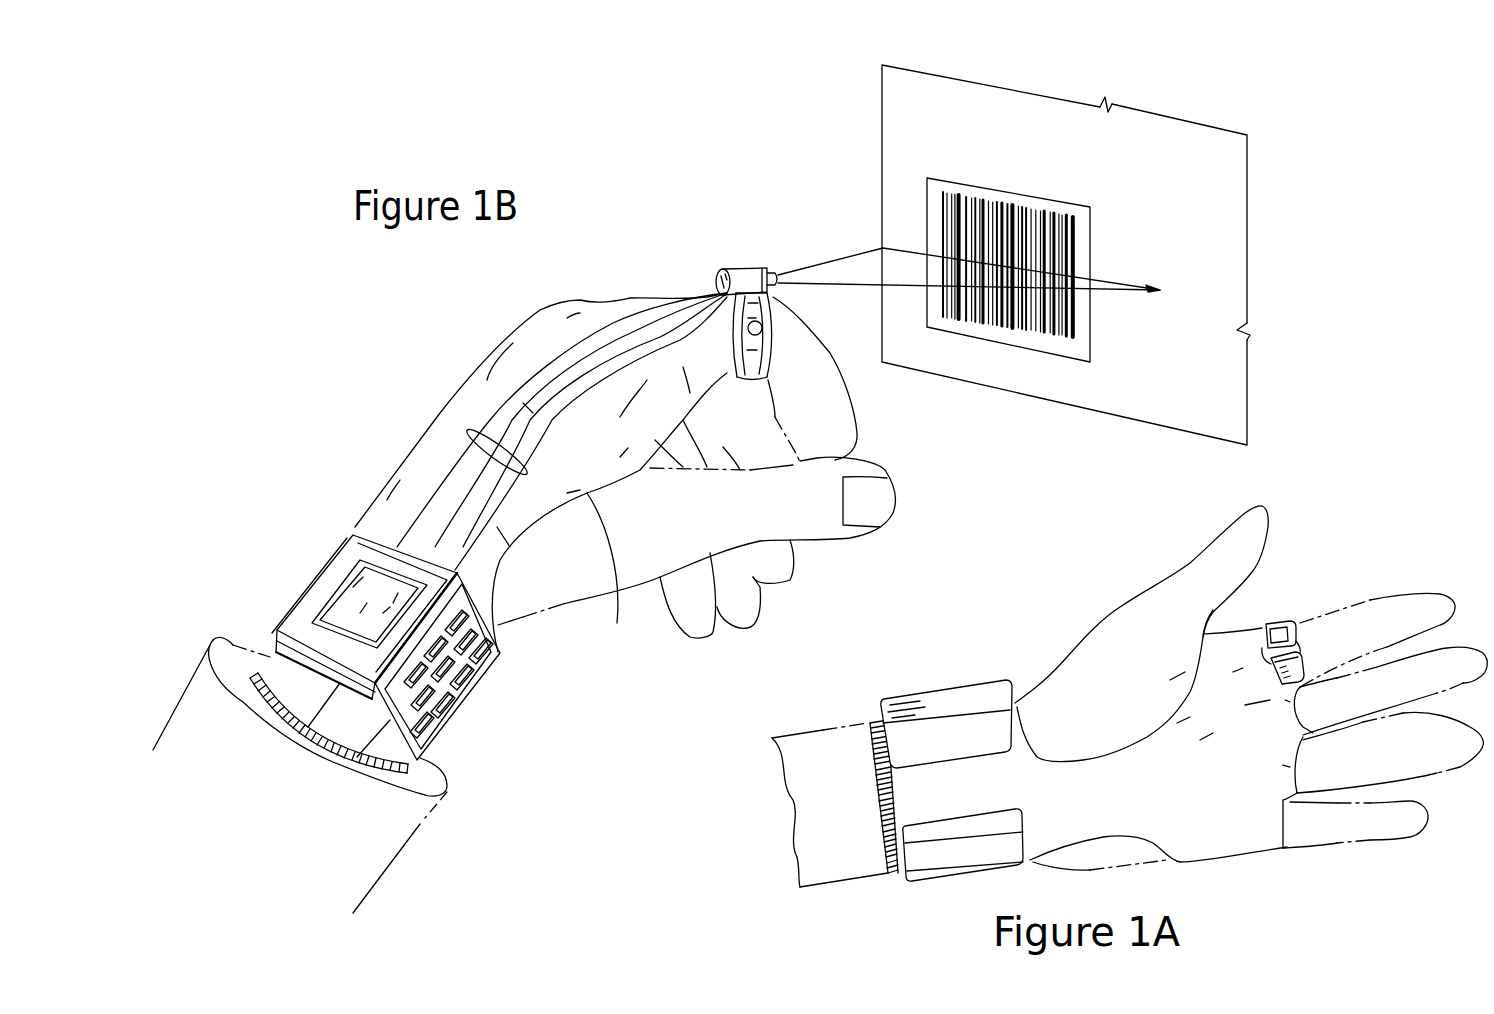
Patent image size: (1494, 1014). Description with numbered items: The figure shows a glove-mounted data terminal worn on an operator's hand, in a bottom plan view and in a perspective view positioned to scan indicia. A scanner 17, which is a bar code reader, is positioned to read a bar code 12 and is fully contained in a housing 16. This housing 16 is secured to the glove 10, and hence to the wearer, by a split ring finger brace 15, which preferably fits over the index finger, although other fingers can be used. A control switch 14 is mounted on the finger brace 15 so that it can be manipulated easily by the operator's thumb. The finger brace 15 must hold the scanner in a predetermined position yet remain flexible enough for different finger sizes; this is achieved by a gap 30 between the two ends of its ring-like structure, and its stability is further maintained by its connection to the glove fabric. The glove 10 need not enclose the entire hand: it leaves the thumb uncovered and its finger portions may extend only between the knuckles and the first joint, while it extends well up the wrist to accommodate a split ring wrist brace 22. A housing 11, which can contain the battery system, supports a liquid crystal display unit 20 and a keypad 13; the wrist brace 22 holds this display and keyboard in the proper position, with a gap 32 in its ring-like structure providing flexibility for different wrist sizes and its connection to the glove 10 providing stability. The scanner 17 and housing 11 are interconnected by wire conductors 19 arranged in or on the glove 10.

In FIG. 1B, the glove 10 is at (625, 475).
In FIG. 1A, the glove 10 is at (1242, 857).
In FIG. 1B, the housing 11 is at (272, 650).
In FIG. 1B, the bar code 12 is at (1015, 194).
In FIG. 1B, the keypad 13 is at (465, 667).
In FIG. 1B, the control switch 14 is at (762, 330).
In FIG. 1B, the split ring finger brace 15 is at (758, 310).
In FIG. 1A, the split ring finger brace 15 is at (1283, 622).
In FIG. 1B, the housing 16 is at (722, 274).
In FIG. 1B, the scanner 17 is at (779, 271).
In FIG. 1B, the wire conductors 19 is at (467, 430).
In FIG. 1B, the liquid crystal display unit 20 is at (357, 587).
In FIG. 1A, the split ring wrist brace 22 is at (983, 687).
In FIG. 1A, the gap 30 is at (1266, 641).
In FIG. 1A, the gap 32 is at (913, 793).